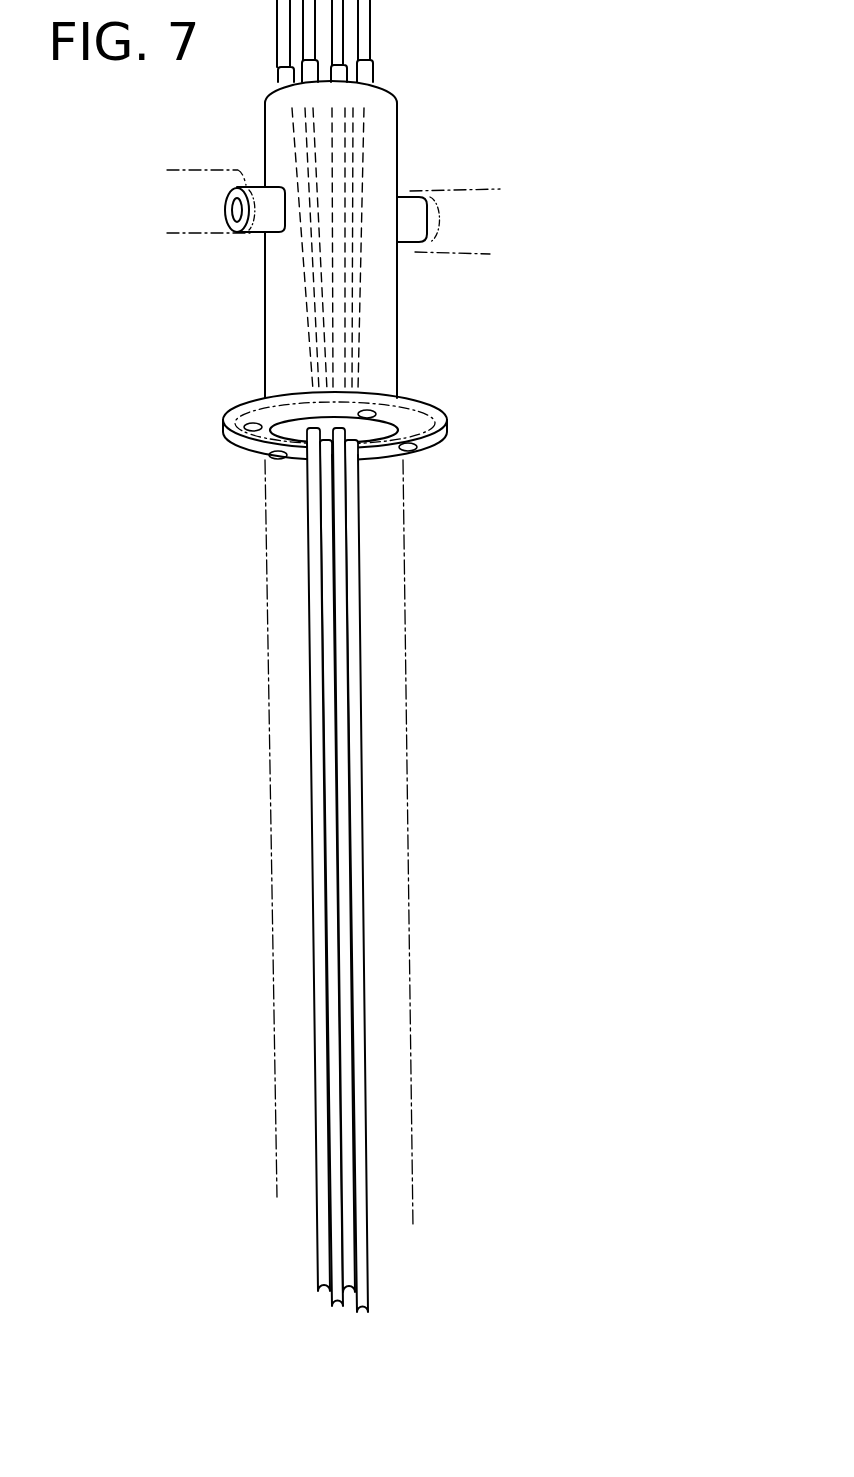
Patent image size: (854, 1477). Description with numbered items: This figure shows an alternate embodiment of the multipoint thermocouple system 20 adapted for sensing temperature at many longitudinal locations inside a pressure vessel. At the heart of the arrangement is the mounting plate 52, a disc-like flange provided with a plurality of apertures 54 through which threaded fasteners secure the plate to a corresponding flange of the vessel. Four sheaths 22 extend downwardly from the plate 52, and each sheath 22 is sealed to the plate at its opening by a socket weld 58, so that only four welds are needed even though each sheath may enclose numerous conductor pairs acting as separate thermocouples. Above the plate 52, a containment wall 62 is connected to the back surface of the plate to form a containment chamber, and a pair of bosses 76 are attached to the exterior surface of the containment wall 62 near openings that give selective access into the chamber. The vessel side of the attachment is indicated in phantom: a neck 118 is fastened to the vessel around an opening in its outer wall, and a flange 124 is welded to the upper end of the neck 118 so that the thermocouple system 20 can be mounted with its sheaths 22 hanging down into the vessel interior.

The thermocouple system 20 is at (425, 133).
The sheath 22 is at (318, 772).
The plate 52 is at (237, 412).
The apertures 54 is at (408, 446).
The socket weld 58 is at (353, 452).
The containment wall 62 is at (285, 313).
The bosses 76 is at (260, 215).
The neck 118 is at (270, 793).
The flange 124 is at (430, 463).